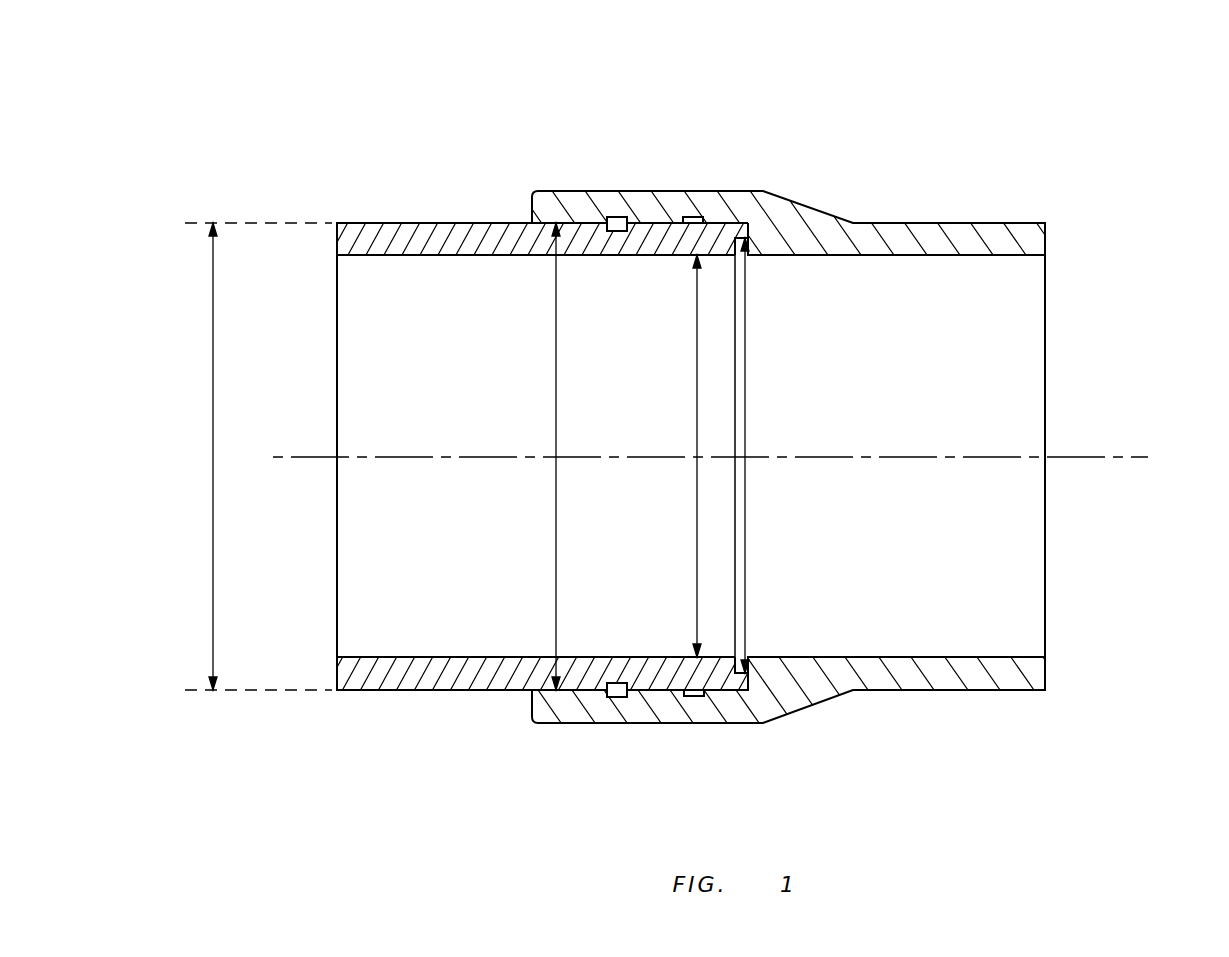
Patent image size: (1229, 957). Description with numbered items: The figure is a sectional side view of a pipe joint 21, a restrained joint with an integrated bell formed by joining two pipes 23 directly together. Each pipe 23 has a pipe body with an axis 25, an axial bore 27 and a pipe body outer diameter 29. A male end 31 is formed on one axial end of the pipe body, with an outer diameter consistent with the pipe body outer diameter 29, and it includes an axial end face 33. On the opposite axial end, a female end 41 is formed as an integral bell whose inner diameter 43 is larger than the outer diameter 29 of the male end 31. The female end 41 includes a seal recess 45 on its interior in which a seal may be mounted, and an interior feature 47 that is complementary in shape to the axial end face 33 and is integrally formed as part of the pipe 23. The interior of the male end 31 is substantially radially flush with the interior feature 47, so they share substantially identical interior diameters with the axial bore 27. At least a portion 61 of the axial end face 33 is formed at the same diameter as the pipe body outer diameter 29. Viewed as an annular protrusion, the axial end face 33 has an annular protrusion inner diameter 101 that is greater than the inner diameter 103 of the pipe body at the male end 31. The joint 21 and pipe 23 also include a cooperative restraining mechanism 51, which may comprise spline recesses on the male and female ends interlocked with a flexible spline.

The pipe joint 21 is at (1126, 102).
The pipe 23 is at (390, 233).
The axis 25 is at (1093, 455).
The axial bore 27 is at (378, 258).
The pipe body outer diameter 29 is at (253, 456).
The male end 31 is at (637, 693).
The axial end face 33 is at (763, 247).
The female end 41 is at (555, 205).
The inner diameter 43 is at (541, 456).
The seal recess 45 is at (695, 222).
The interior feature 47 is at (712, 245).
The cooperative restraining mechanism 51 is at (617, 205).
The portion of the axial end face 61 is at (748, 238).
The annular protrusion inner diameter 101 is at (767, 455).
The inner diameter of the pipe body 103 is at (673, 456).